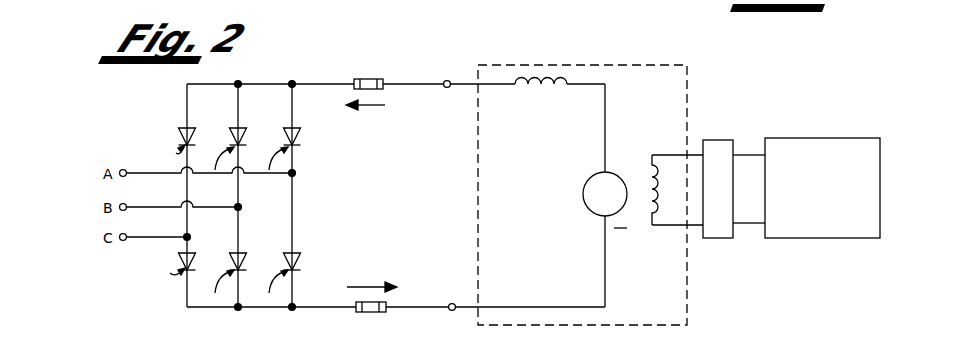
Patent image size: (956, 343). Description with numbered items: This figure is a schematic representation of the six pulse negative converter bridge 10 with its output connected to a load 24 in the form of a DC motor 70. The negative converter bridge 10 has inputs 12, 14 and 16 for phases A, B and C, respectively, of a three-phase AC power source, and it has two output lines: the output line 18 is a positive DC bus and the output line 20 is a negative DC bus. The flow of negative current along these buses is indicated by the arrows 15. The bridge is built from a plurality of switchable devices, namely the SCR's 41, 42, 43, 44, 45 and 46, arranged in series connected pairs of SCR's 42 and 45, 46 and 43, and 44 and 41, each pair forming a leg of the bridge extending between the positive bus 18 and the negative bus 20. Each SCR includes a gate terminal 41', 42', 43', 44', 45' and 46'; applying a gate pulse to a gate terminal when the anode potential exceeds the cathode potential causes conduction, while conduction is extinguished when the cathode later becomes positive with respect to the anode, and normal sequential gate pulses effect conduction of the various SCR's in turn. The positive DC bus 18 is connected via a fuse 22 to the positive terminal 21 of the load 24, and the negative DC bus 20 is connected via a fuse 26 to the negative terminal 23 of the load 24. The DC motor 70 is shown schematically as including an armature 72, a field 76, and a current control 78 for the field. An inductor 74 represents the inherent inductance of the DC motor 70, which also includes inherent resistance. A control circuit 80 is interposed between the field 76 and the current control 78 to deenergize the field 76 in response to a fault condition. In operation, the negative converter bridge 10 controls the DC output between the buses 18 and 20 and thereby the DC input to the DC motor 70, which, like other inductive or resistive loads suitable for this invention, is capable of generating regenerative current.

The negative converter bridge 10 is at (292, 66).
The input 12 is at (176, 176).
The input 14 is at (172, 209).
The input 16 is at (163, 240).
The arrows 15 is at (369, 106).
The output line 18 is at (329, 83).
The output line 20 is at (316, 309).
The positive terminal 21 is at (446, 80).
The negative terminal 23 is at (452, 311).
The fuse 22 is at (366, 78).
The fuse 26 is at (370, 313).
The load 24 is at (590, 156).
The DC motor 70 is at (690, 76).
The armature 72 is at (597, 174).
The inductor 74 is at (550, 91).
The field 76 is at (650, 216).
The current control 78 is at (815, 138).
The control circuit 80 is at (722, 140).
The SCR 41 is at (306, 250).
The SCR 42 is at (198, 125).
The SCR 43 is at (251, 250).
The SCR 44 is at (303, 125).
The SCR 45 is at (201, 250).
The SCR 46 is at (249, 125).
The gate terminal 41' is at (270, 287).
The gate terminal 42' is at (159, 143).
The gate terminal 43' is at (214, 289).
The gate terminal 44' is at (267, 173).
The gate terminal 45' is at (159, 284).
The gate terminal 46' is at (213, 173).